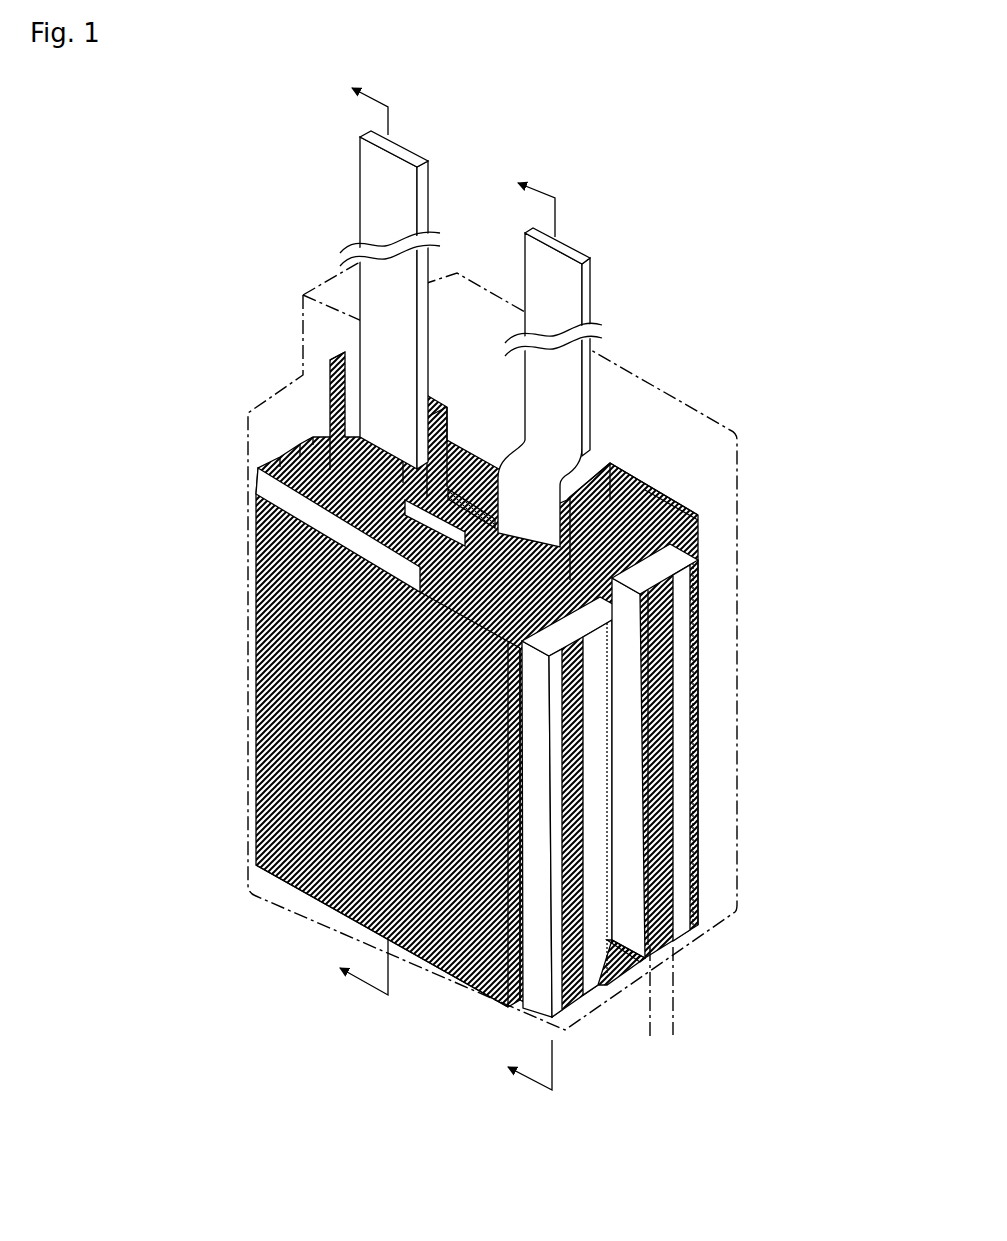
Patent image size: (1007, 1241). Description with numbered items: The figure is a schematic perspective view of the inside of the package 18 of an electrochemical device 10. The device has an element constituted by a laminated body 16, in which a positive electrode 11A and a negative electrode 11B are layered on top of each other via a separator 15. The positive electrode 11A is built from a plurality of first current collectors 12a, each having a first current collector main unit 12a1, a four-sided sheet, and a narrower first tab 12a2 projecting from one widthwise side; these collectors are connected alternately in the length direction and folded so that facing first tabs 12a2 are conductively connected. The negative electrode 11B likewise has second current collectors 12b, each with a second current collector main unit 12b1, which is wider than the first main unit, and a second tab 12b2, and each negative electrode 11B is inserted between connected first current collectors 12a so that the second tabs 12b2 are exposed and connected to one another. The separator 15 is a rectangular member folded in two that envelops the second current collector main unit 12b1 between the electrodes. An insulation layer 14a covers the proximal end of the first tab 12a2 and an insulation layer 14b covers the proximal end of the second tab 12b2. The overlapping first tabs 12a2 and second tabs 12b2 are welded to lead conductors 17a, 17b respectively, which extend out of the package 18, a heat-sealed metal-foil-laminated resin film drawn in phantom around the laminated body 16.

The electrochemical device 10 is at (732, 208).
The positive electrode 11A is at (607, 478).
The negative electrode 11B is at (423, 397).
The first current collector 12a is at (523, 957).
The first current collector main unit 12a1 is at (417, 952).
The first tab 12a2 is at (635, 490).
The second current collector 12b is at (612, 978).
The second current collector main unit 12b1 is at (587, 965).
The second tab 12b2 is at (299, 439).
The insulation layer 14a is at (645, 496).
The insulation layer 14b is at (462, 408).
The separator 15 is at (503, 1002).
The laminated body 16 is at (278, 441).
The lead conductor 17a is at (553, 277).
The lead conductor 17b is at (377, 182).
The package 18 is at (652, 382).